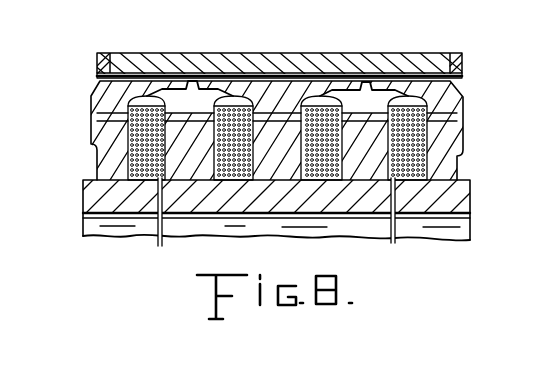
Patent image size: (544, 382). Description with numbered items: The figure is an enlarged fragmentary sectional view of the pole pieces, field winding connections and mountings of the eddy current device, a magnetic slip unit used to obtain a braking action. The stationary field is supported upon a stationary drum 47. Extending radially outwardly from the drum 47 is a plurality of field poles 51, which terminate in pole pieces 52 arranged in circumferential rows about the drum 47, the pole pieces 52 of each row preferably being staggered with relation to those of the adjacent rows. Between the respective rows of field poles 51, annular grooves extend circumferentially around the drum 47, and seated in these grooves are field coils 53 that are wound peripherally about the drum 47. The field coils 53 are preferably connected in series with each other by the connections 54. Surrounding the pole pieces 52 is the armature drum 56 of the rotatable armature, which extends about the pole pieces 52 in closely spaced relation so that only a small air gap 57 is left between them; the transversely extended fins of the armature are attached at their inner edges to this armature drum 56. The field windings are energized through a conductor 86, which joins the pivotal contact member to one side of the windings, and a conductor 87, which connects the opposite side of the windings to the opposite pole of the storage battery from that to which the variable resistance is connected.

The stationary drum 47 is at (467, 204).
The field poles 51 is at (97, 128).
The pole pieces 52 is at (198, 84).
The field coils 53 is at (167, 112).
The connections 54 is at (274, 128).
The armature drum 56 is at (337, 68).
The air gap 57 is at (425, 80).
The conductor 86 is at (397, 241).
The conductor 87 is at (157, 241).